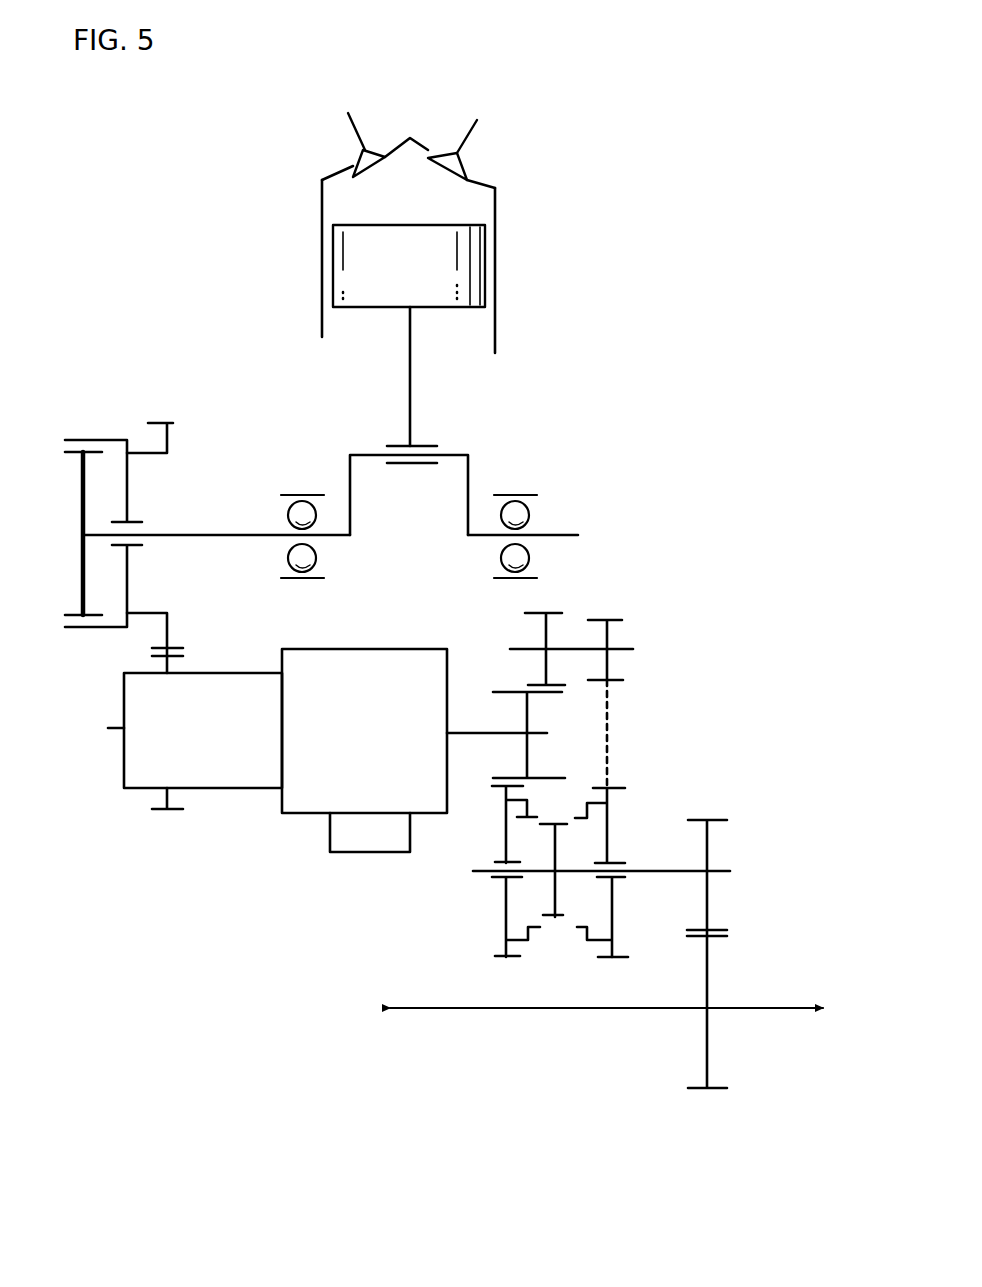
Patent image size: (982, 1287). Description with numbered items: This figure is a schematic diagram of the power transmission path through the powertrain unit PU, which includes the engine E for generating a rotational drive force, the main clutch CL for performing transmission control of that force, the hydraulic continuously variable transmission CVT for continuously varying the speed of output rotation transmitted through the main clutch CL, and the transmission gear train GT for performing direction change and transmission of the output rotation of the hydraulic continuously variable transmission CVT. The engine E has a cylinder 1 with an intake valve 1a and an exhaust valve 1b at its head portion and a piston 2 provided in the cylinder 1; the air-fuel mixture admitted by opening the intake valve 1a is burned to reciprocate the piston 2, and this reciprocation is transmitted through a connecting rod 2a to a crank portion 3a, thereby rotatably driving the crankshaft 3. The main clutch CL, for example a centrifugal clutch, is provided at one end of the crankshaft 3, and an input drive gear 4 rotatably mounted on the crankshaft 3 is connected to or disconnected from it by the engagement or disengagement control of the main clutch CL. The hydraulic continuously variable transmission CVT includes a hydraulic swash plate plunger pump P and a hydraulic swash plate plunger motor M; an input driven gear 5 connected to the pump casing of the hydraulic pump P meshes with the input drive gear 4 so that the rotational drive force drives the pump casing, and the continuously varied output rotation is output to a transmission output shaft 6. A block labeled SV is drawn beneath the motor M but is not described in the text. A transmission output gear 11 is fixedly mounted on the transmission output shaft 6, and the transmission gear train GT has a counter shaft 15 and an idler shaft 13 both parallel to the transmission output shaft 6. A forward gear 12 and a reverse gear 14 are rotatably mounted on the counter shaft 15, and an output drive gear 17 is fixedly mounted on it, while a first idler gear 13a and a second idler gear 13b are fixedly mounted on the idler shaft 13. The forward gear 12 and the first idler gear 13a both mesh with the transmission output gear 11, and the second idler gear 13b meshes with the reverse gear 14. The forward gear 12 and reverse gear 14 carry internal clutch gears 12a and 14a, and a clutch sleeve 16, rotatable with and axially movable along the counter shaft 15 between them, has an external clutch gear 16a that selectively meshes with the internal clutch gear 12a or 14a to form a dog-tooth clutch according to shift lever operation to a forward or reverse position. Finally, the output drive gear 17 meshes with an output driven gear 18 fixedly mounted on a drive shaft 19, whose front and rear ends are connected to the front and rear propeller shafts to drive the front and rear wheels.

The cylinder 1 is at (497, 322).
The intake valve 1a is at (476, 130).
The exhaust valve 1b is at (350, 113).
The piston 2 is at (400, 276).
The connecting rod 2a is at (412, 372).
The crankshaft 3 is at (228, 534).
The crank portion 3a is at (448, 450).
The input drive gear 4 is at (173, 424).
The input driven gear 5 is at (180, 812).
The transmission output shaft 6 is at (477, 732).
The transmission output gear 11 is at (505, 690).
The forward gear 12 is at (481, 932).
The internal clutch gear 12a is at (520, 927).
The idler shaft 13 is at (601, 678).
The first idler gear 13a is at (552, 613).
The second idler gear 13b is at (613, 622).
The reverse gear 14 is at (630, 934).
The internal clutch gear 14a is at (593, 925).
The counter shaft 15 is at (650, 868).
The clutch sleeve 16 is at (553, 842).
The external clutch gear 16a is at (557, 918).
The output drive gear 17 is at (718, 818).
The output driven gear 18 is at (698, 1092).
The drive shaft 19 is at (643, 1010).
The engine E is at (448, 257).
The powertrain unit PU is at (675, 300).
The main clutch CL is at (56, 478).
The hydraulic continuously variable transmission CVT is at (277, 793).
The hydraulic swash plate plunger pump P is at (196, 740).
The hydraulic swash plate plunger motor M is at (356, 738).
The servo valve SV is at (358, 840).
The transmission gear train GT is at (609, 854).